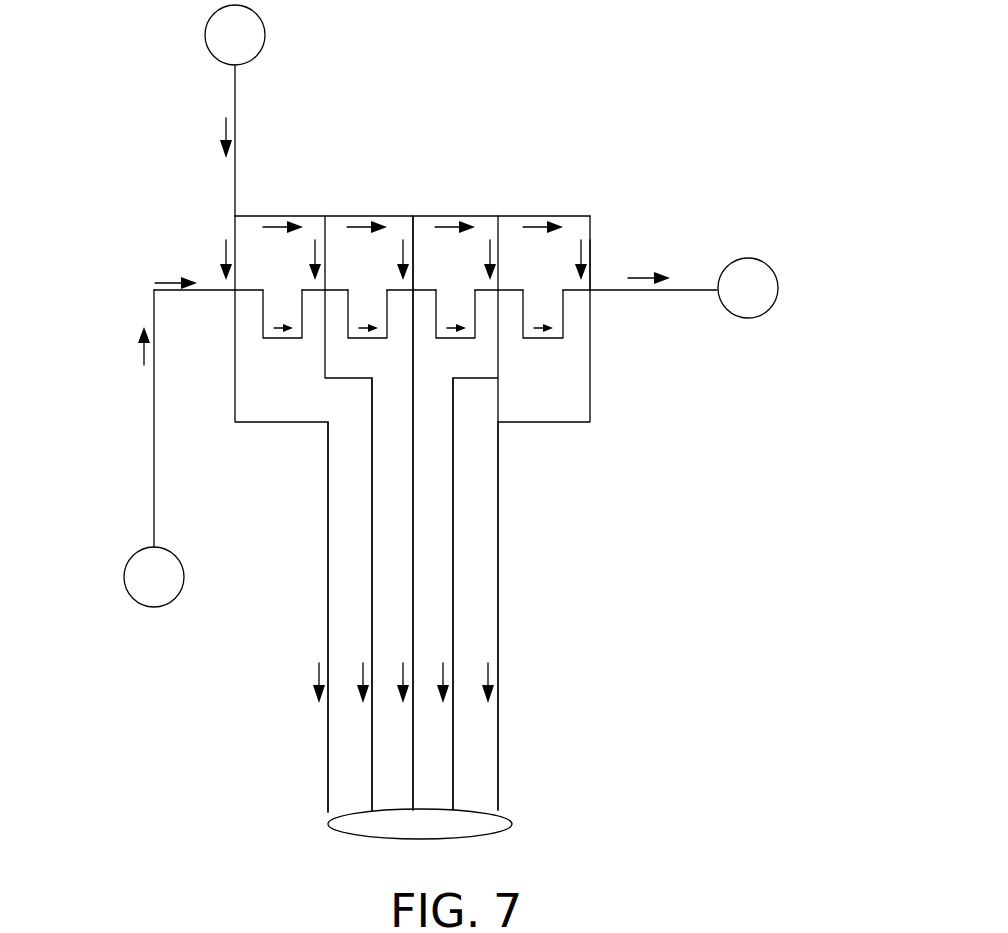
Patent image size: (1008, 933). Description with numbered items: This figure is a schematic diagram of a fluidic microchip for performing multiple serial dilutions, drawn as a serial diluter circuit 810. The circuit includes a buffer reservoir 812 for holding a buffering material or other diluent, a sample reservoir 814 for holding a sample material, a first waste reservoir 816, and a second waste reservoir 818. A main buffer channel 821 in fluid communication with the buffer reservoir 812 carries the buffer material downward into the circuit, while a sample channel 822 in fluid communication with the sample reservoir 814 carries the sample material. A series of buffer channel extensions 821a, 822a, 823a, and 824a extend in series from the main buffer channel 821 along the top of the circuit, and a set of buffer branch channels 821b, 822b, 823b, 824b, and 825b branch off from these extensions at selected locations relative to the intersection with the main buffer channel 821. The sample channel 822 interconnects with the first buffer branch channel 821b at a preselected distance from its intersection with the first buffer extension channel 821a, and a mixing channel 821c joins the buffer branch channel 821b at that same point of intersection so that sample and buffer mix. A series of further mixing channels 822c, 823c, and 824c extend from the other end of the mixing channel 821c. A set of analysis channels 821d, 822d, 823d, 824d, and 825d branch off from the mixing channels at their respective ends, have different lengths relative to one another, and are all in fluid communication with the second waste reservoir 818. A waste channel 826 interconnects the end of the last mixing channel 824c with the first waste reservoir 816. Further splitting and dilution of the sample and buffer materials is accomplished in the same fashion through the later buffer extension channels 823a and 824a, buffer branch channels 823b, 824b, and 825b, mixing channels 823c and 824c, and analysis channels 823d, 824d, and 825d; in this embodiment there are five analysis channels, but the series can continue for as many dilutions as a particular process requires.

The serial diluter circuit 810 is at (624, 112).
The buffer reservoir 812 is at (266, 38).
The sample reservoir 814 is at (124, 574).
The first waste reservoir 816 is at (779, 288).
The second waste reservoir 818 is at (512, 826).
The main buffer channel 821 is at (236, 122).
The buffer channel extension 821a is at (268, 215).
The buffer branch channel 821b is at (272, 258).
The mixing channel 821c is at (285, 338).
The analysis channel 821d is at (328, 549).
The sample channel 822 is at (154, 428).
The buffer channel extension 822a is at (360, 215).
The buffer branch channel 822b is at (362, 258).
The mixing channel 822c is at (363, 338).
The analysis channel 822d is at (372, 612).
The buffer channel extension 823a is at (453, 215).
The buffer branch channel 823b is at (450, 258).
The mixing channel 823c is at (455, 338).
The analysis channel 823d is at (413, 510).
The buffer channel extension 824a is at (545, 215).
The buffer branch channel 824b is at (535, 258).
The mixing channel 824c is at (535, 338).
The analysis channel 824d is at (453, 560).
The buffer branch channel 825b is at (591, 250).
The analysis channel 825d is at (498, 608).
The waste channel 826 is at (678, 290).